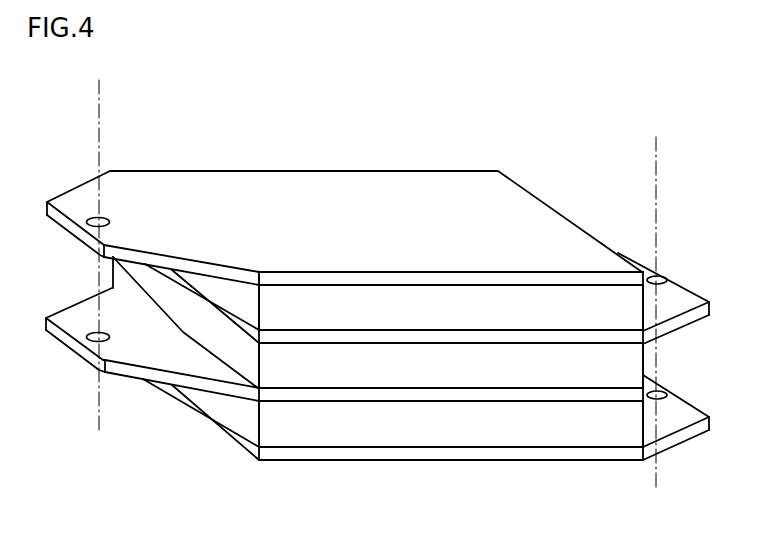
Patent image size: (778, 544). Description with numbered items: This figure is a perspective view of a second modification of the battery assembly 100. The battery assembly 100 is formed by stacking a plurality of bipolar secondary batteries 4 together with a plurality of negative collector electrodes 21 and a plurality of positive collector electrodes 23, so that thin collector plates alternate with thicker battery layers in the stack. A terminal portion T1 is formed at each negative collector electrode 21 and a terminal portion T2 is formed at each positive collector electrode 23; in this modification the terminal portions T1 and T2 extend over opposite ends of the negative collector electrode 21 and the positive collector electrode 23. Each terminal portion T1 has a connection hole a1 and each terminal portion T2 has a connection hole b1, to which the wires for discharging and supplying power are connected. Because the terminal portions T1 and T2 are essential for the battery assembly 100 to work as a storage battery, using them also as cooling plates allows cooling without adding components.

The battery assembly 100 is at (319, 102).
The negative collector electrode 21 is at (358, 280).
The positive collector electrode 23 is at (442, 337).
The bipolar secondary battery 4 is at (401, 310).
The terminal portion T1 is at (63, 203).
The terminal portion T2 is at (678, 300).
The connection hole a1 is at (97, 218).
The connection hole b1 is at (658, 277).